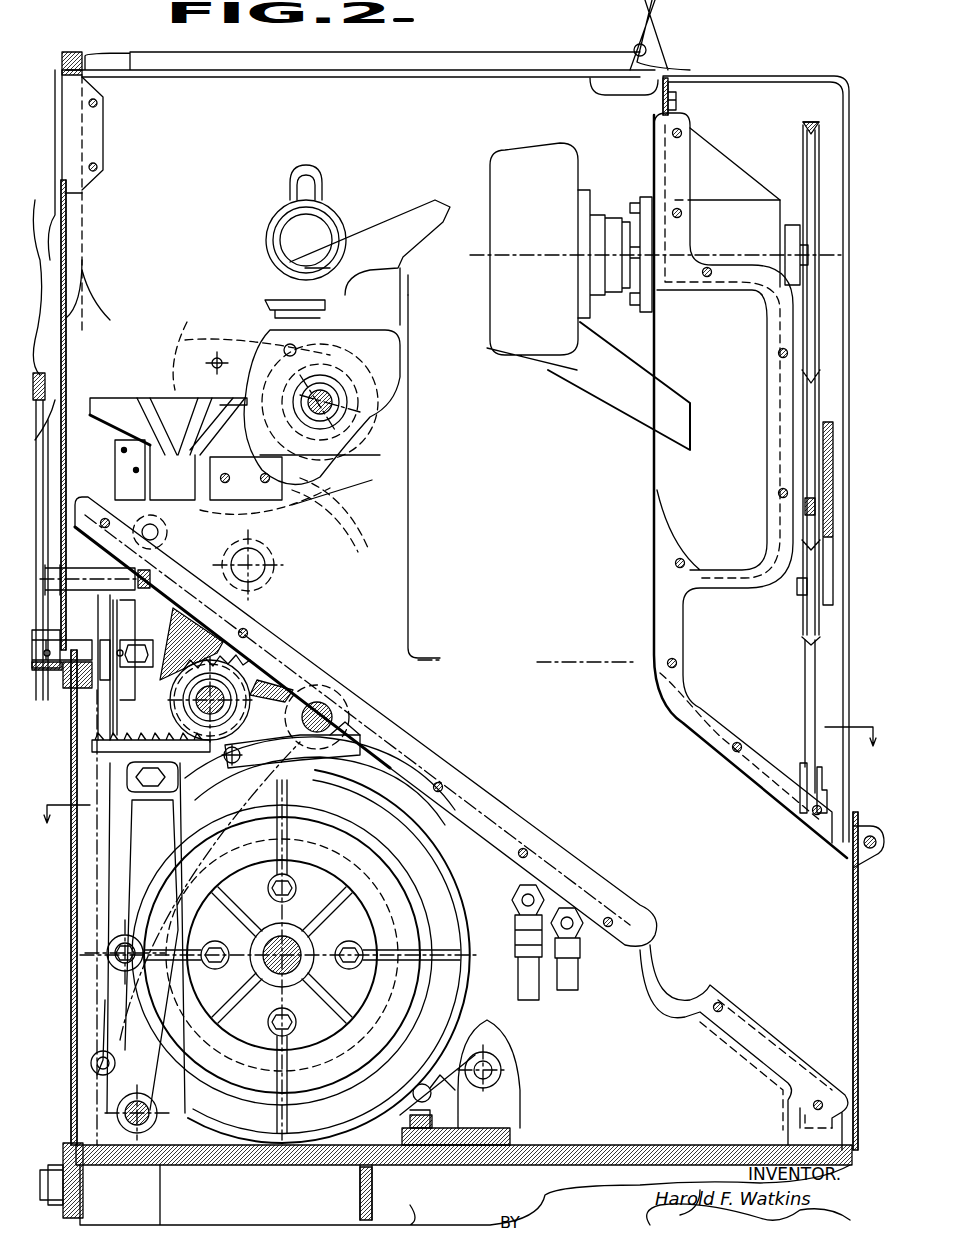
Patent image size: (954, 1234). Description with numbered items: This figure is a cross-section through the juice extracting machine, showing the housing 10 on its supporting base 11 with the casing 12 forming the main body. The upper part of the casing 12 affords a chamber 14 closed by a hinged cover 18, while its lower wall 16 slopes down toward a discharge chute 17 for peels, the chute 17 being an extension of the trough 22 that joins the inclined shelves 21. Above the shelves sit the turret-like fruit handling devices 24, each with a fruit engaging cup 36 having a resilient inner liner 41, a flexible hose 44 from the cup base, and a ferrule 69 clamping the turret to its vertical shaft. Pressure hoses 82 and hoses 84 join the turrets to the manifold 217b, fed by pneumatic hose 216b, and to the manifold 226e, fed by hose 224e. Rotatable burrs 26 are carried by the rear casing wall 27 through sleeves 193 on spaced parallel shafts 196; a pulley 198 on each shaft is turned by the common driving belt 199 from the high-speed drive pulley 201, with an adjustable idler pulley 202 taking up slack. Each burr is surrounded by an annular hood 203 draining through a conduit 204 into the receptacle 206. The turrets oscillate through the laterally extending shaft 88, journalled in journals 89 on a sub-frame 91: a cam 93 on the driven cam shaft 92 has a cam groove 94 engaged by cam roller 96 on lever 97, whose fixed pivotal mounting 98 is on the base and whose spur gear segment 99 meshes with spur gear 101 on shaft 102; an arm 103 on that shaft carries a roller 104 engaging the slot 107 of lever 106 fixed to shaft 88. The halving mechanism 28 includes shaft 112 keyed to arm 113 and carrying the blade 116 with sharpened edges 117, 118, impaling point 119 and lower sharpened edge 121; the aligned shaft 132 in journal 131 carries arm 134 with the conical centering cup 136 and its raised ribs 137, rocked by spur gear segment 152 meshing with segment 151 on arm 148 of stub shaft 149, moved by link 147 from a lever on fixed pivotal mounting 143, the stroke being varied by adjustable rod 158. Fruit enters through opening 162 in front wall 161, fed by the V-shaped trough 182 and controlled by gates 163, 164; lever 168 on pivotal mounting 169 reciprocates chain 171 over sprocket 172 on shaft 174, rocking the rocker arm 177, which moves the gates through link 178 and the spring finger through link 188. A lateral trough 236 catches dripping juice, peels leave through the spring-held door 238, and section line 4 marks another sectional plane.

The housing 10 is at (782, 70).
The supporting base 11 is at (560, 1160).
The casing 12 is at (690, 680).
The chamber 14 is at (420, 112).
The lower wall 16 is at (493, 815).
The discharge chute 17 is at (790, 1030).
The hinged cover 18 is at (490, 70).
The inclined shelves 21 is at (186, 320).
The trough 22 is at (390, 530).
The turret-like fruit handling devices 24 is at (254, 242).
The rotatable burrs 26 is at (494, 158).
The rear casing wall 27 is at (660, 560).
The halving mechanism 28 is at (363, 467).
The fruit engaging cup 36 is at (322, 212).
The inner liner 41 is at (345, 218).
The flexible hose 44 is at (290, 183).
The ferrule 69 is at (270, 305).
The pressure hoses 82 is at (580, 905).
The hoses 84 is at (535, 880).
The laterally extending shaft 88 is at (330, 705).
The journals 89 is at (355, 760).
The sub-frame 91 is at (222, 626).
The driven cam shaft 92 is at (292, 940).
The cam 93 is at (435, 849).
The cam groove 94 is at (400, 907).
The cam roller 96 is at (140, 945).
The lever 97 is at (130, 823).
The fixed pivotal mounting 98 is at (118, 1110).
The spur gear segment 99 is at (92, 748).
The spur gear 101 is at (225, 690).
The shaft 102 is at (255, 690).
The arm 103 is at (185, 735).
The roller 104 is at (235, 800).
The lever 106 is at (300, 770).
The slot 107 is at (265, 770).
The shaft 112 is at (355, 372).
The arm 113 is at (216, 345).
The blade 116 is at (406, 275).
The sharpened edge 117 is at (390, 228).
The sharpened edge 118 is at (345, 275).
The impaling point 119 is at (283, 250).
The lower sharpened edge 121 is at (295, 255).
The journal 131 is at (284, 348).
The shaft 132 is at (307, 382).
The arm 134 is at (292, 498).
The centering cup 136 is at (100, 408).
The raised ribs 137 is at (190, 410).
The fixed pivotal mounting 143 is at (418, 1090).
The link 147 is at (150, 583).
The arm 148 is at (200, 514).
The stub shaft 149 is at (268, 570).
The spur gear segment 151 is at (345, 503).
The spur gear segment 152 is at (388, 402).
The adjustable rod 158 is at (52, 1166).
The front wall 161 is at (82, 128).
The opening 162 is at (74, 243).
The gate 163 is at (80, 315).
The gate 164 is at (66, 215).
The lever 168 is at (90, 1063).
The pivotal mounting 169 is at (492, 1065).
The chain 171 is at (97, 720).
The sprocket 172 is at (97, 690).
The shaft 174 is at (130, 640).
The rocker arm 177 is at (90, 645).
The link 178 is at (63, 480).
The V-shaped trough 182 is at (50, 372).
The link 188 is at (42, 452).
The sleeves 193 is at (618, 220).
The shafts 196 is at (790, 255).
The pulley 198 is at (803, 148).
The driving belt 199 is at (805, 688).
The high-speed drive pulley 201 is at (800, 770).
The adjustable idler pulley 202 is at (803, 612).
The annular hood 203 is at (556, 147).
The drainage conduit 204 is at (625, 405).
The receptacle 206 is at (728, 565).
The pneumatic hose 216b is at (578, 986).
The manifold 217b is at (578, 963).
The hose 224e is at (518, 983).
The manifold 226e is at (515, 918).
The lateral trough 236 is at (660, 990).
The spring-held door 238 is at (853, 910).
The section line 4 is at (459, 761).